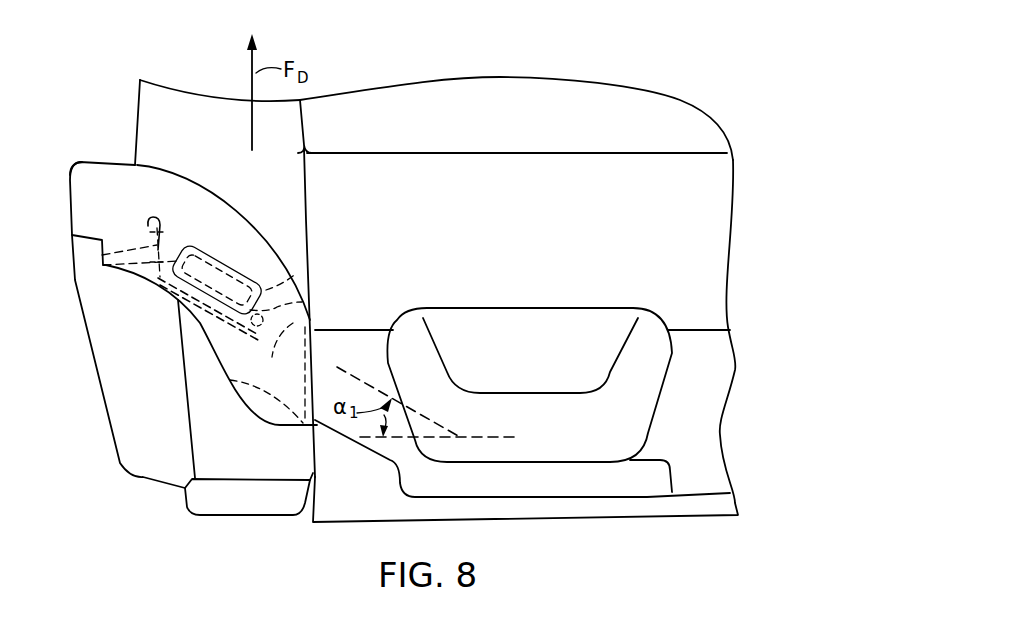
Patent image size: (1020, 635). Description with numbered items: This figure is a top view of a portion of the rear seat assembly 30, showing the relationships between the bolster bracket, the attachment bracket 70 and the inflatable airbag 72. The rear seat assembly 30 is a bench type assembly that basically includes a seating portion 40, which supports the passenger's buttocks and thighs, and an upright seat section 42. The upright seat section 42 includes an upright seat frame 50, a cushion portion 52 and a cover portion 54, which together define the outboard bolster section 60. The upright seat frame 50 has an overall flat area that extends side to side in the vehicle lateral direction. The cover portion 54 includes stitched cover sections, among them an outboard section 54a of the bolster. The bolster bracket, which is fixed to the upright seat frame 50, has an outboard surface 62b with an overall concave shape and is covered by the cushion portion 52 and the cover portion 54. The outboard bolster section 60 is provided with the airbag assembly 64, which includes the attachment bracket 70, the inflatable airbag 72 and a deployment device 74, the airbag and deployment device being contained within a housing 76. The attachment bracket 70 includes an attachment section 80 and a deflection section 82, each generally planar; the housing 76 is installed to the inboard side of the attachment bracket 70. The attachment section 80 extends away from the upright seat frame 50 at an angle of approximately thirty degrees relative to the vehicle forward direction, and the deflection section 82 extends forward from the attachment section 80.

The rear seat assembly 30 is at (588, 60).
The seating portion 40 is at (440, 113).
The upright seat section 42 is at (557, 337).
The upright seat frame 50 is at (497, 437).
The cushion portion 52 is at (102, 187).
The cover portion 54 is at (263, 247).
The outboard section 54a is at (68, 200).
The outboard bolster section 60 is at (248, 500).
The outboard surface 62b is at (246, 380).
The airbag assembly 64 is at (205, 252).
The attachment bracket 70 is at (102, 255).
The inflatable airbag 72 is at (228, 268).
The deployment device 74 is at (302, 302).
The housing 76 is at (297, 273).
The attachment section 80 is at (207, 315).
The deflection section 82 is at (167, 227).